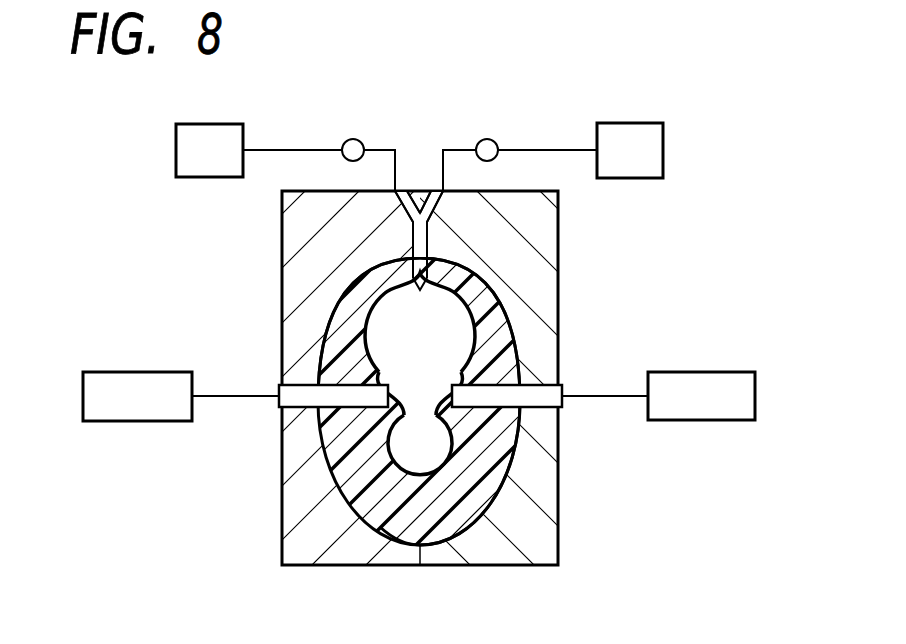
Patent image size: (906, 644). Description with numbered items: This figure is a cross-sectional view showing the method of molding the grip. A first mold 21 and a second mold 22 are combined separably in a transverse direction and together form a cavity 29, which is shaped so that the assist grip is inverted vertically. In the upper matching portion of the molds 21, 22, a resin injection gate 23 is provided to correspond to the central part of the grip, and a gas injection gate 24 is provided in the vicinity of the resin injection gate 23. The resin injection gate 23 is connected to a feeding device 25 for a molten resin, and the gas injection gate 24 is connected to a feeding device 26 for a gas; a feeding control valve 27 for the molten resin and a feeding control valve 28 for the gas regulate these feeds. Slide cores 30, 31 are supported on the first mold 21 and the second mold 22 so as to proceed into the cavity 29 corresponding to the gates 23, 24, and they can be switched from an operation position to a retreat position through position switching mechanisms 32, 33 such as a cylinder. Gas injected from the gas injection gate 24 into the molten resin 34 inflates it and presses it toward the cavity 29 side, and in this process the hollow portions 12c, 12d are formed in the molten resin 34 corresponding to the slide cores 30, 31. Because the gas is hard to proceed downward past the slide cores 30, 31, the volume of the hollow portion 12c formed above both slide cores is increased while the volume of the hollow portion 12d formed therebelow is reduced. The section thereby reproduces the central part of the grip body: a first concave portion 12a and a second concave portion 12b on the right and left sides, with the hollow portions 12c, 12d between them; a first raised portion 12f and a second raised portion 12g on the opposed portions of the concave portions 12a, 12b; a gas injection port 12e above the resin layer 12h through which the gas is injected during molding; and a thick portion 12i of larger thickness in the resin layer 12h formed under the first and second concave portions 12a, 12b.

The first mold 21 is at (282, 241).
The second mold 22 is at (558, 234).
The resin injection gate 23 is at (415, 225).
The gas injection gate 24 is at (428, 225).
The feeding device for a molten resin 25 is at (200, 124).
The feeding device for a gas 26 is at (640, 122).
The feeding control valve for the molten resin 27 is at (347, 140).
The feeding control valve for the gas 28 is at (493, 140).
The cavity 29 is at (360, 505).
The slide core 30 is at (291, 410).
The slide core 31 is at (560, 412).
The position switching mechanism 32 is at (103, 421).
The position switching mechanism 33 is at (733, 421).
The molten resin 34 is at (515, 312).
The first concave portion 12a is at (292, 380).
The second concave portion 12b is at (505, 388).
The hollow portion 12c is at (420, 322).
The hollow portion 12d is at (420, 445).
The gas injection port 12e is at (412, 274).
The first raised portion 12f is at (401, 380).
The second raised portion 12g is at (440, 380).
The resin layer 12h is at (500, 465).
The thick portion 12i is at (374, 522).